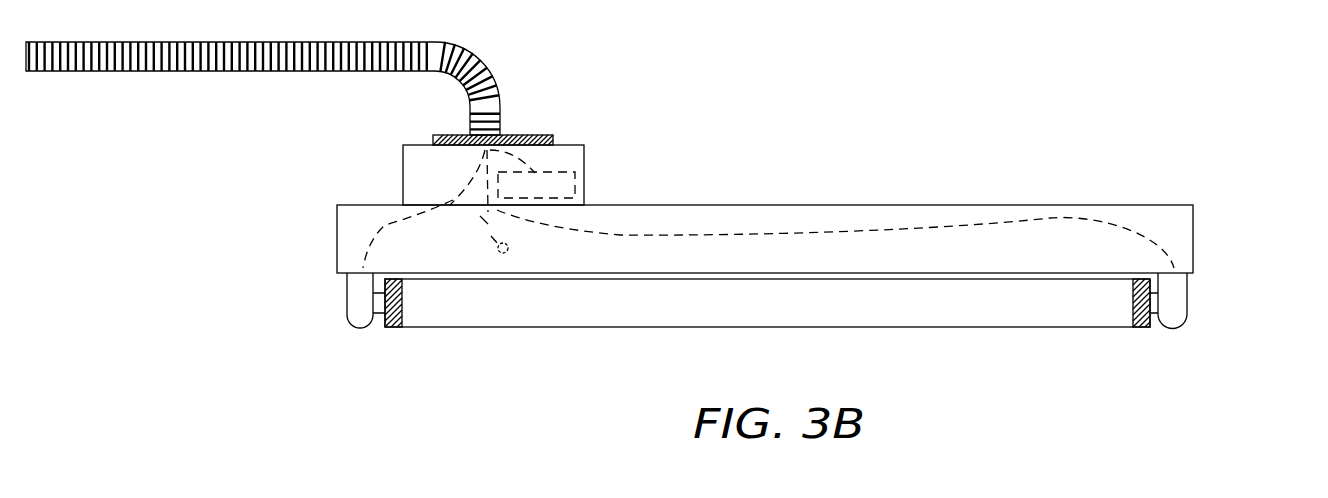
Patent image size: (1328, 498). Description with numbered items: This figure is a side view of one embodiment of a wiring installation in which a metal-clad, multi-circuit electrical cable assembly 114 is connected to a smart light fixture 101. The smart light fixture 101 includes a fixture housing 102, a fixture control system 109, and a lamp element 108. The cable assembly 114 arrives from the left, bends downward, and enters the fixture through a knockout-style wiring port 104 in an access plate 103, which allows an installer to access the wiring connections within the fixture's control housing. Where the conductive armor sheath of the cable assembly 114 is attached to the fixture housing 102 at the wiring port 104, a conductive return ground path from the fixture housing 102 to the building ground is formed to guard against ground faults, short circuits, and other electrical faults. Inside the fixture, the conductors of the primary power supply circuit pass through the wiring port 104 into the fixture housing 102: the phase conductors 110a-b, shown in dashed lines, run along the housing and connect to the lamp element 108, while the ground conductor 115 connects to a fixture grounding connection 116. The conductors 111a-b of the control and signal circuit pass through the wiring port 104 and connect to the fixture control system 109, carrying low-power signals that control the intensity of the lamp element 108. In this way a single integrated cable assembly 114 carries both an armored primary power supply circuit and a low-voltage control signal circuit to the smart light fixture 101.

The smart light fixture 101 is at (1228, 225).
The fixture housing 102 is at (865, 205).
The access plate 103 is at (435, 142).
The wiring port 104 is at (503, 138).
The lamp element 108 is at (895, 307).
The fixture control system 109 is at (575, 190).
The phase conductors 110a-b is at (381, 224).
The conductors of the Class 2/3 circuit 111a-b is at (538, 160).
The metal-clad, multi-circuit electrical cable assembly 114 is at (167, 65).
The ground conductor 115 is at (483, 222).
The fixture grounding connection 116 is at (510, 246).